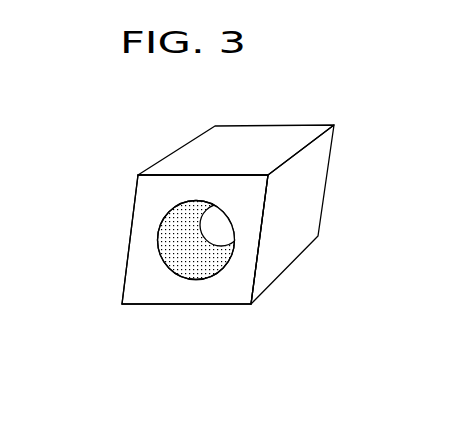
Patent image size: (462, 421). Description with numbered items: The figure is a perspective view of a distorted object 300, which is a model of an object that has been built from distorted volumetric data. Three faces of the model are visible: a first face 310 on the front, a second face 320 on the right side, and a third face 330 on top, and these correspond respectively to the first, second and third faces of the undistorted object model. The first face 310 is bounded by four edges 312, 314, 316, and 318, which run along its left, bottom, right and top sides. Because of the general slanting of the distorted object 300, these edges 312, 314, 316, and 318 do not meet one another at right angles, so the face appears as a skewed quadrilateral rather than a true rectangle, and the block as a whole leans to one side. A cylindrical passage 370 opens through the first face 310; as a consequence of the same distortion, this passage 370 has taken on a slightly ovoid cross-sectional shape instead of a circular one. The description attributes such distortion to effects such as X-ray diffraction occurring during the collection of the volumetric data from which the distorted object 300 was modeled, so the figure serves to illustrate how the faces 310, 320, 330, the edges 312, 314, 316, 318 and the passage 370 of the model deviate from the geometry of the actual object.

The distorted object 300 is at (234, 217).
The first face 310 is at (200, 240).
The edge 312 is at (125, 272).
The edge 314 is at (222, 305).
The edge 316 is at (252, 278).
The edge 318 is at (178, 177).
The second face 320 is at (283, 233).
The third face 330 is at (238, 143).
The cylindrical passage 370 is at (172, 237).